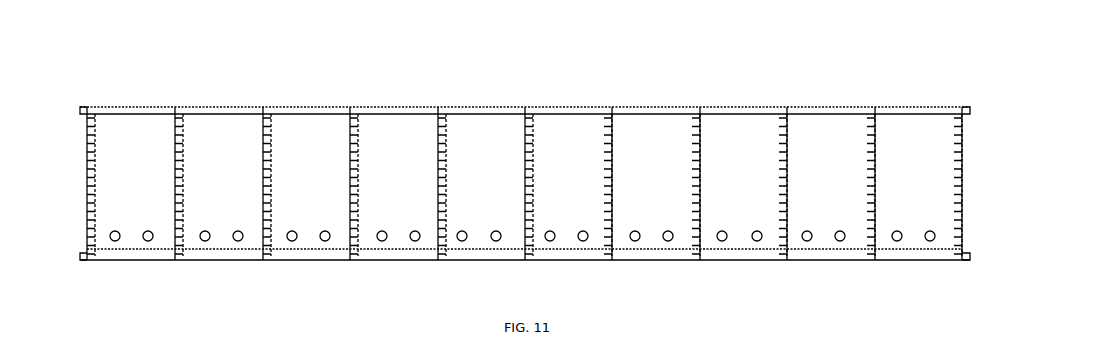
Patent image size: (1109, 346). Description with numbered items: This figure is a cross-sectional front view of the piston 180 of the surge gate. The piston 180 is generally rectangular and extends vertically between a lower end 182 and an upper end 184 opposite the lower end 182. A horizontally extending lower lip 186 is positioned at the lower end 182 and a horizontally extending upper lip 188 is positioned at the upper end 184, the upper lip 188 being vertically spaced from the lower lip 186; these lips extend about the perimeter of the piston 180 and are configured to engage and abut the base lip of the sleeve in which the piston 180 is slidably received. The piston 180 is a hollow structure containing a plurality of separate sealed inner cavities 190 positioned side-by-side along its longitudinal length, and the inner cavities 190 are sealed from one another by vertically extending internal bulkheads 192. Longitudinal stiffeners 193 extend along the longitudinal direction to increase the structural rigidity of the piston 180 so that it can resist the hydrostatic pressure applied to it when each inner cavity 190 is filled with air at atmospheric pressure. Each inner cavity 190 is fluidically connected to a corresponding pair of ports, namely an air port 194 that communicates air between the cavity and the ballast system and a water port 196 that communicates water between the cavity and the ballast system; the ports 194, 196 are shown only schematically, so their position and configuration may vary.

The piston 180 is at (185, 260).
The lower end 182 is at (870, 260).
The upper end 184 is at (858, 106).
The lower lip 186 is at (82, 260).
The upper lip 188 is at (83, 106).
The inner cavity 190 is at (118, 146).
The internal bulkhead 192 is at (175, 166).
The longitudinal stiffener 193 is at (138, 249).
The air port 194 is at (115, 231).
The water port 196 is at (149, 231).